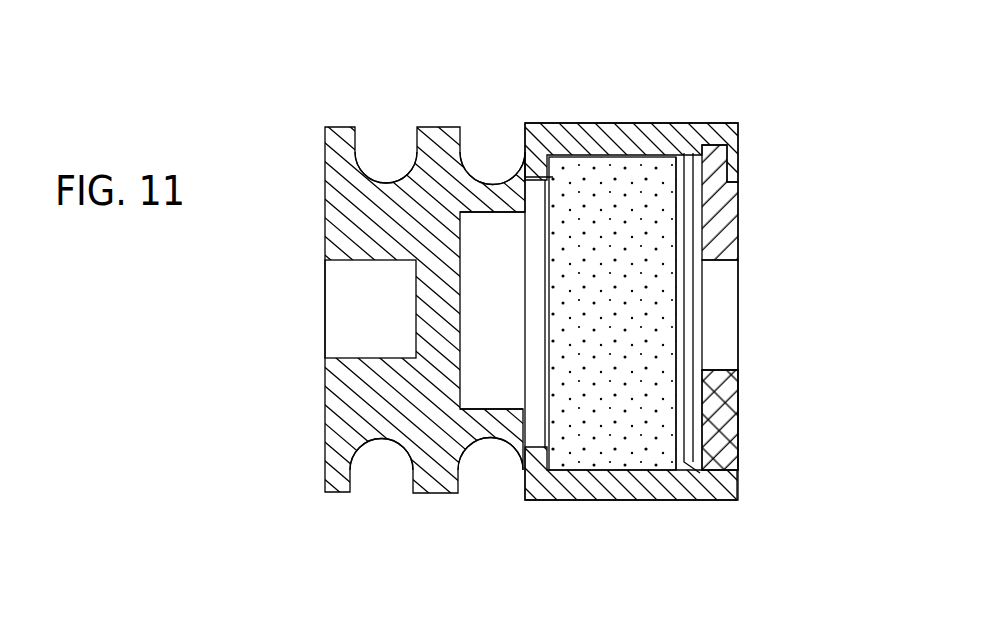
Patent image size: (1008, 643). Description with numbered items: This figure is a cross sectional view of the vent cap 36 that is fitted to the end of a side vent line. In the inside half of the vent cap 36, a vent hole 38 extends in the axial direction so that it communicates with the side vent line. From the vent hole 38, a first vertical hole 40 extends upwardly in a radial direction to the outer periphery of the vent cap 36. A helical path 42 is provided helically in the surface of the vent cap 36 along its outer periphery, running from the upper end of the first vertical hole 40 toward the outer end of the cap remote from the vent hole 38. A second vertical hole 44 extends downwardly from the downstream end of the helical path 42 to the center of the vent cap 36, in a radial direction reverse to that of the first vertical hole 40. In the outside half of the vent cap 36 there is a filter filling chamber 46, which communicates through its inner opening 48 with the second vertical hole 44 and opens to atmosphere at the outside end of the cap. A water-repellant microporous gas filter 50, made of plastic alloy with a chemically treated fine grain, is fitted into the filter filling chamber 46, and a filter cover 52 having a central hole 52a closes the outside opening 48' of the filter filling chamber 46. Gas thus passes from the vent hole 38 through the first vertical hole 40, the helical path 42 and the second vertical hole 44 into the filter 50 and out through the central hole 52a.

The vent cap 36 is at (333, 213).
The vent hole 38 is at (357, 345).
The first vertical hole 40 is at (395, 222).
The helical path 42 is at (503, 470).
The second vertical hole 44 is at (495, 230).
The filter filling chamber 46 is at (637, 158).
The inner opening 48 is at (605, 367).
The outside opening 48' is at (755, 336).
The water-repellant microporous gas filter 50 is at (605, 425).
The filter cover 52 is at (730, 234).
The central hole 52a is at (720, 333).